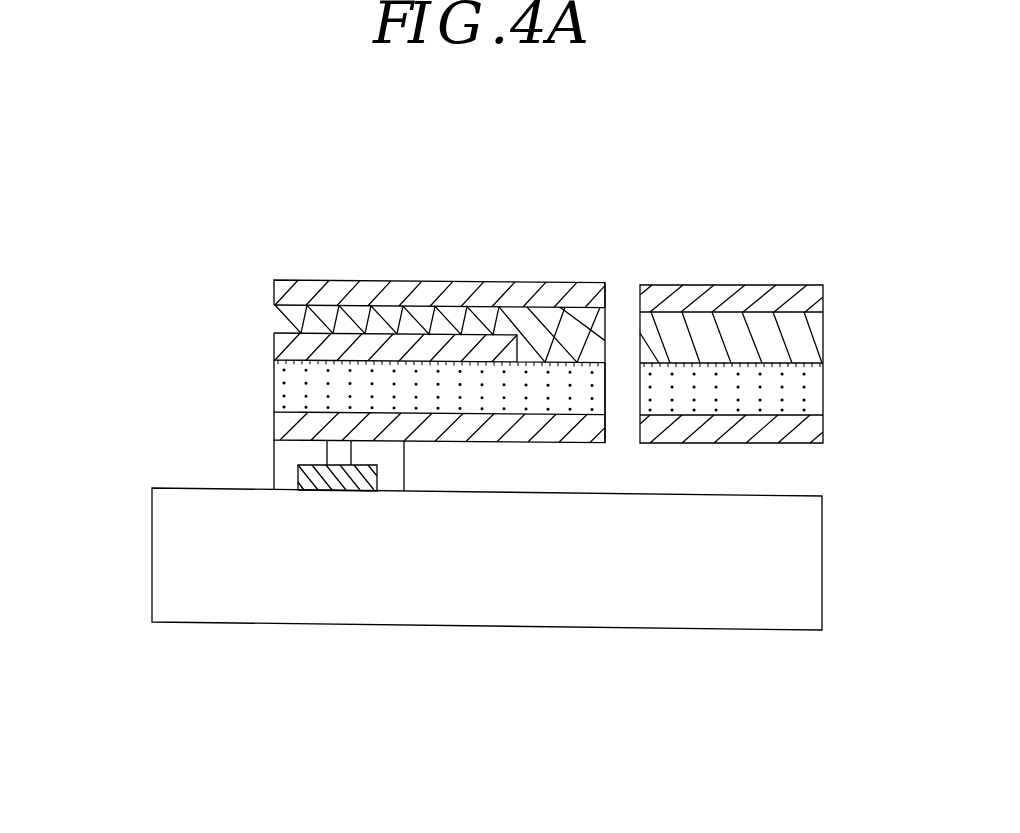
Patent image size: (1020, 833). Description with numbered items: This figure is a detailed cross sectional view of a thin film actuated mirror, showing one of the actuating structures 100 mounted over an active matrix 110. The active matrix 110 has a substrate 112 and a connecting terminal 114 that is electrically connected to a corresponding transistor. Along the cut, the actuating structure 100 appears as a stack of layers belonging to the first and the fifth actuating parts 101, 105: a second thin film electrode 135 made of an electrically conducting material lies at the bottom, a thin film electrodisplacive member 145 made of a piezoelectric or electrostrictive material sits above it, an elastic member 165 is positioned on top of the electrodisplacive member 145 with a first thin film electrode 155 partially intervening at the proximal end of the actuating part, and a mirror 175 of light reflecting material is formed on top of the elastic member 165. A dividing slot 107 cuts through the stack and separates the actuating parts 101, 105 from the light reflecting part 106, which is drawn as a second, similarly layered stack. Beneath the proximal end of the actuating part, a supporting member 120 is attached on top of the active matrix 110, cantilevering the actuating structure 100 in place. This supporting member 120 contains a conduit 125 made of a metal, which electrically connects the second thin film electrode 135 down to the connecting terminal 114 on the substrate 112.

The actuating structure 100 is at (735, 122).
The first actuating part 101 is at (262, 258).
The fifth actuating part 105 is at (514, 331).
The light reflecting part 106 is at (784, 261).
The dividing slot 107 is at (621, 335).
The active matrix 110 is at (138, 458).
The substrate 112 is at (397, 593).
The connecting terminal 114 is at (340, 485).
The supporting member 120 is at (288, 453).
The conduit 125 is at (330, 456).
The second thin film electrode 135 is at (475, 425).
The thin film electrodisplacive member 145 is at (497, 380).
The first thin film electrode 155 is at (393, 348).
The elastic member 165 is at (453, 322).
The mirror 175 is at (320, 292).